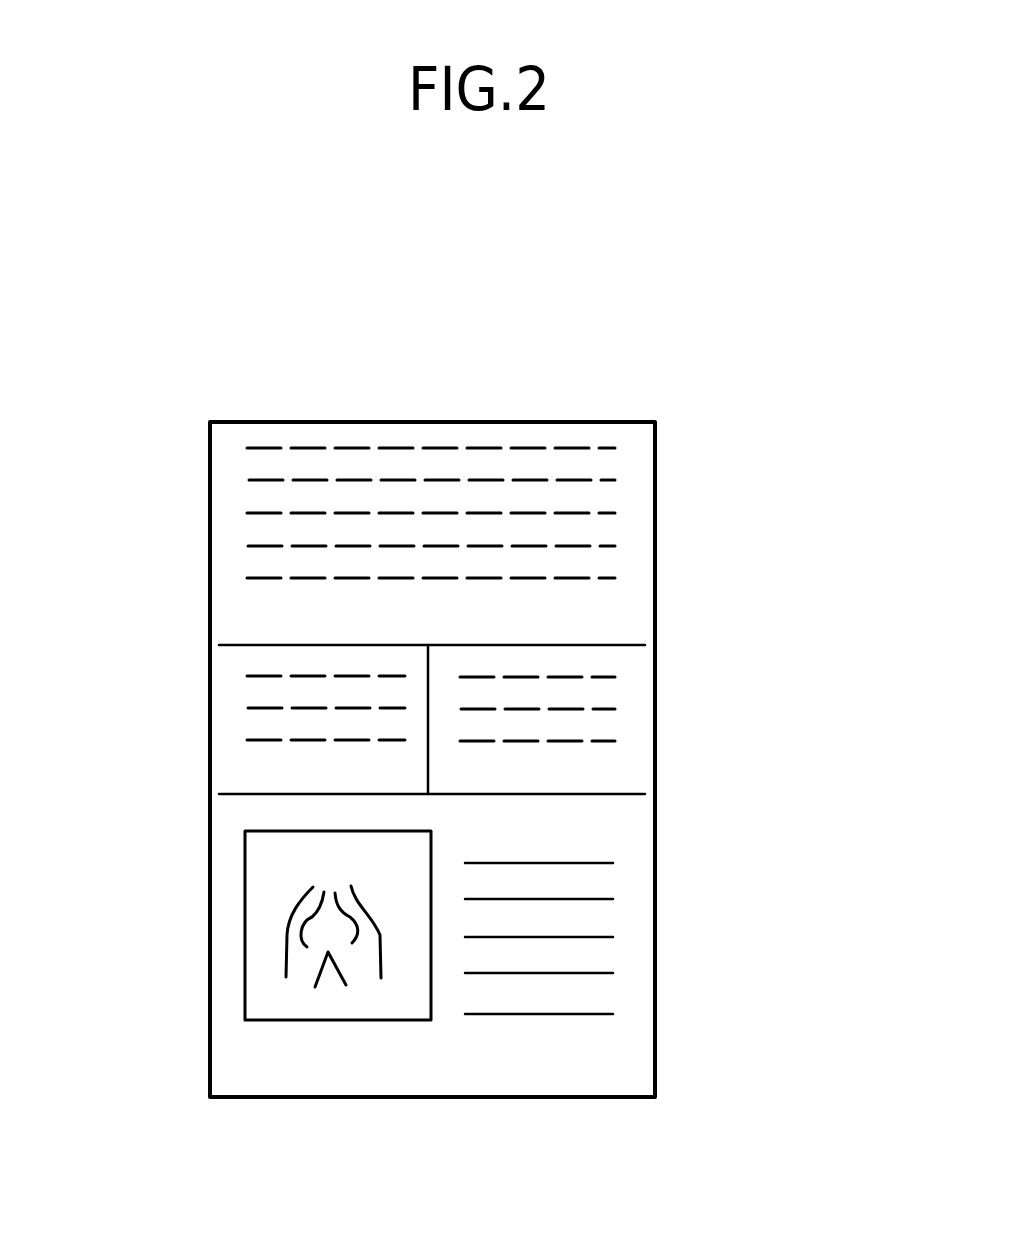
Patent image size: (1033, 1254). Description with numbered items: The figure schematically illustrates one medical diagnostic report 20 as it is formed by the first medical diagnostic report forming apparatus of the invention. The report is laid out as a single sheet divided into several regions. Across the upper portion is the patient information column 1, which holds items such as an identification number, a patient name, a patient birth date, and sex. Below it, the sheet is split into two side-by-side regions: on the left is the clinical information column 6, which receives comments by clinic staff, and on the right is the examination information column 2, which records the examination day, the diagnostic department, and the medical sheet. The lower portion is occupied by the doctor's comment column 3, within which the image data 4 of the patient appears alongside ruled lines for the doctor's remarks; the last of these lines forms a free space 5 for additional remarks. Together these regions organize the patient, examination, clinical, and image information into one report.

The medical diagnostic report 20 is at (630, 318).
The patient information column 1 is at (705, 432).
The examination information column 2 is at (657, 728).
The doctor's comment column 3 is at (705, 806).
The image data 4 is at (344, 1020).
The free space 5 is at (560, 1014).
The clinical information column 6 is at (210, 690).